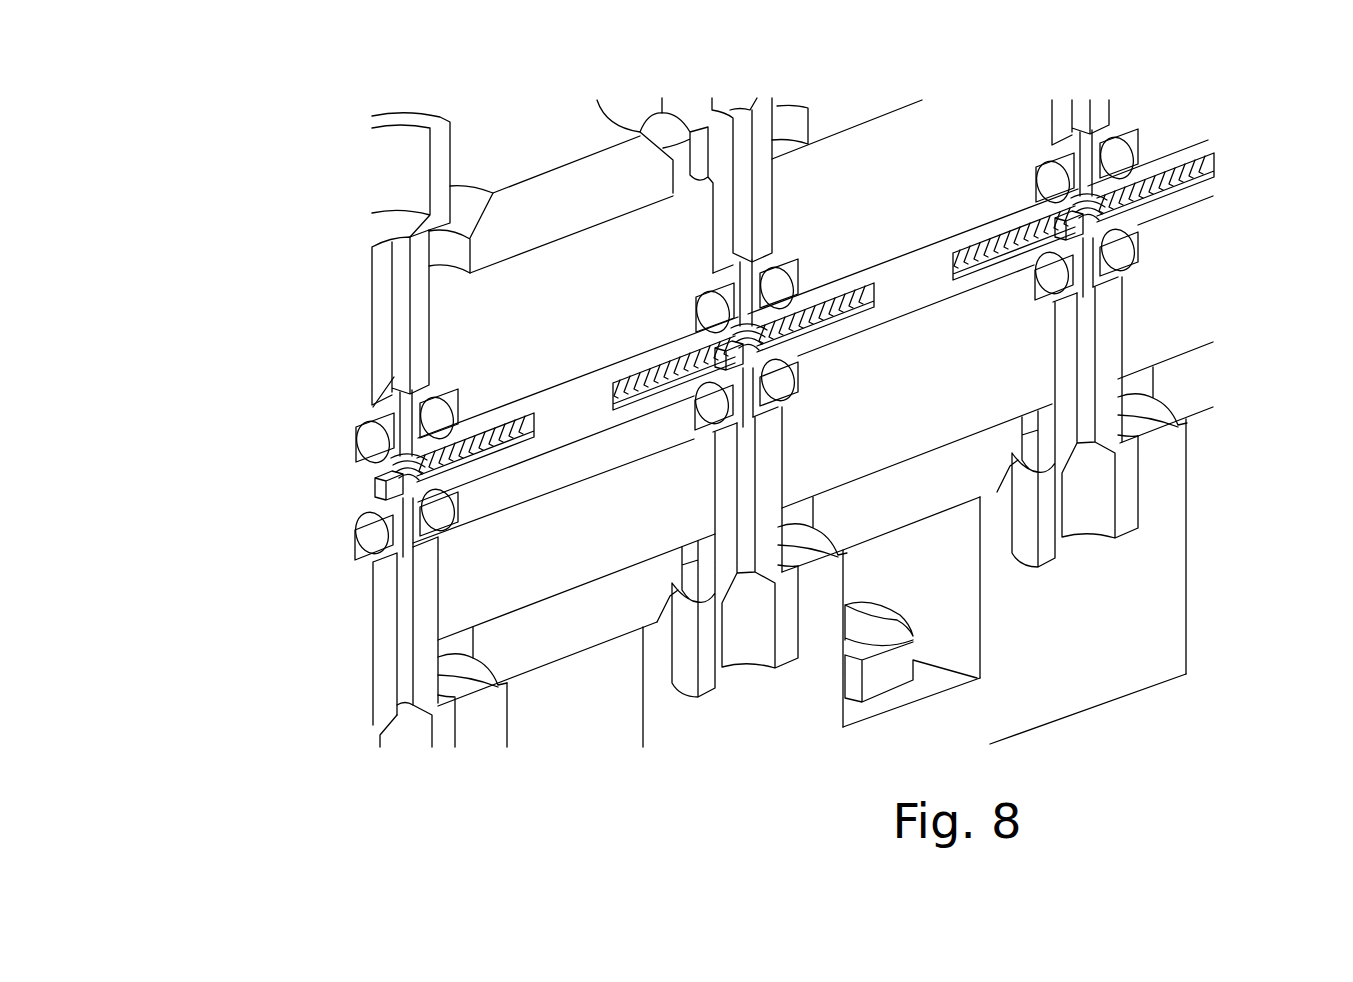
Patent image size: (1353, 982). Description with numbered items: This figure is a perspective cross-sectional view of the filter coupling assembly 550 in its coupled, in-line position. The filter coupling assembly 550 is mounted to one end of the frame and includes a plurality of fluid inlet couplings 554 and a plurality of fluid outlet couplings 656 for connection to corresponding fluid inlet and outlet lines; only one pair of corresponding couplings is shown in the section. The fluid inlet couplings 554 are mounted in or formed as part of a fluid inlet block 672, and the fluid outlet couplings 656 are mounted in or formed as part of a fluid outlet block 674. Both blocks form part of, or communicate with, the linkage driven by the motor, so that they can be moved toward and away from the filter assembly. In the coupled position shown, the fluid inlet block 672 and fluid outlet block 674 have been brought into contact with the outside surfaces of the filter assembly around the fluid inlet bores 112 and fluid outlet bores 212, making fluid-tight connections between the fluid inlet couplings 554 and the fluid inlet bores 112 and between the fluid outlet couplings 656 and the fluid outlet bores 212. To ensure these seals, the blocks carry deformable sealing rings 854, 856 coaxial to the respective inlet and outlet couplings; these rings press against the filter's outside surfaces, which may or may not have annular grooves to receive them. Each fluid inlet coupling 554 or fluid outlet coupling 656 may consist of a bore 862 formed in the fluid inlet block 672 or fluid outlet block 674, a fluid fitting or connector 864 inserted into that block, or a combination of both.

The filter coupling assembly 550 is at (183, 189).
The fluid inlet coupling 554 is at (372, 277).
The fluid fitting or connector 864 is at (388, 344).
The bore 862 is at (396, 380).
The sealing ring 854 is at (378, 440).
The sealing ring 856 is at (377, 531).
The fluid inlet bore 112 is at (388, 466).
The fluid outlet bore 212 is at (377, 507).
The fluid outlet coupling 656 is at (372, 703).
The fluid inlet block 672 is at (893, 108).
The fluid outlet block 674 is at (1192, 354).